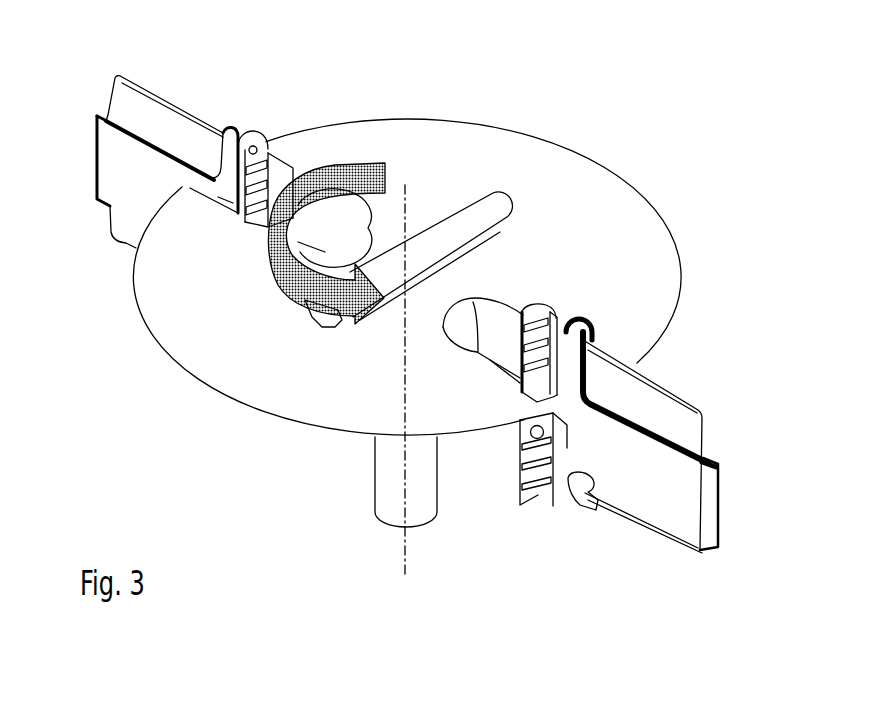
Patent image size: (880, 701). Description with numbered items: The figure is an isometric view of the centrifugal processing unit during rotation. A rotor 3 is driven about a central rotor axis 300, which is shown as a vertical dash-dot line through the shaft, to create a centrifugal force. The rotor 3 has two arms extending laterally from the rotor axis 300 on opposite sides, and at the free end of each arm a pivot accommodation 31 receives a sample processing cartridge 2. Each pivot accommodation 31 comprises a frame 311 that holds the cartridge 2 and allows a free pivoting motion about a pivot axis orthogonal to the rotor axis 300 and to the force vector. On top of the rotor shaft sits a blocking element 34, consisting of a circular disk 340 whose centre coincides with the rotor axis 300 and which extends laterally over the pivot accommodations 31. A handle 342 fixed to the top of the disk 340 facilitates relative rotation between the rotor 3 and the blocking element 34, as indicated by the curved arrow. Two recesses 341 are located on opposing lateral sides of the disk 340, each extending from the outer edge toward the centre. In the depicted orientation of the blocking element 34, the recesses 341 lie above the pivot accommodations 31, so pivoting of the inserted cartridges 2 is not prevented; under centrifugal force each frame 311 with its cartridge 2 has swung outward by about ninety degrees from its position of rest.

The sample processing cartridge 2 is at (117, 97).
The rotor 3 is at (384, 482).
The pivot accommodation 31 is at (277, 84).
The frame 311 is at (127, 198).
The blocking element 34 is at (648, 147).
The circular disk 340 is at (555, 208).
The recess 341 is at (497, 317).
The handle 342 is at (450, 232).
The rotor axis 300 is at (405, 567).